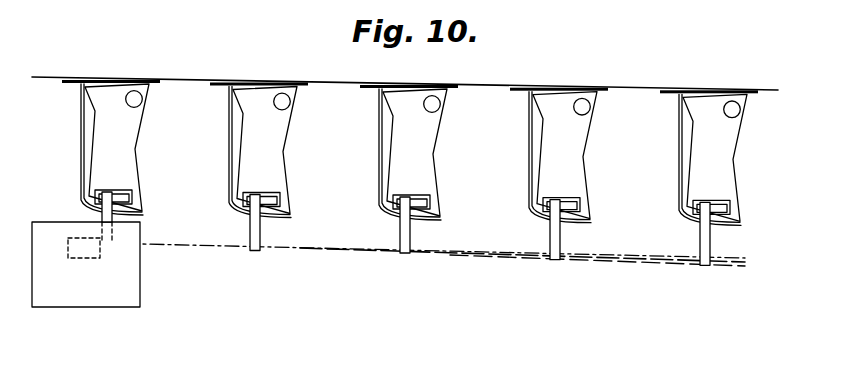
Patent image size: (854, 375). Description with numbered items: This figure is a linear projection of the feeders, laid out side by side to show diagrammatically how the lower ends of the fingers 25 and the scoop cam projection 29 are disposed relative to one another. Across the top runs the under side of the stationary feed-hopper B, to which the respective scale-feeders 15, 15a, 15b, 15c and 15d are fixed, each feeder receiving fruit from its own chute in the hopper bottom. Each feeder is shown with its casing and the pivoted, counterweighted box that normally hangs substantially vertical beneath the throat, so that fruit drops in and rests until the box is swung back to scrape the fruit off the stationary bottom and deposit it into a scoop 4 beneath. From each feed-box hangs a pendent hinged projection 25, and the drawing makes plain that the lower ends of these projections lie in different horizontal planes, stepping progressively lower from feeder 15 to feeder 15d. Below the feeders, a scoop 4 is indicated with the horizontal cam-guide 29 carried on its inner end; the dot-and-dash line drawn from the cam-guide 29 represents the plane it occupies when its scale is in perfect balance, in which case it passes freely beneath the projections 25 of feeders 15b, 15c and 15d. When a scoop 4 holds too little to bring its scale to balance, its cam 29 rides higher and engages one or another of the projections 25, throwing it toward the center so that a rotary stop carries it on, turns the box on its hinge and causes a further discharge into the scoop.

The scale-feeder 15 is at (81, 160).
The scale-feeder 15a is at (230, 183).
The scale-feeder 15b is at (380, 185).
The scale-feeder 15c is at (530, 185).
The scale-feeder 15d is at (680, 187).
The pendent hinged projection 25 is at (102, 212).
The cam-guide 29 is at (69, 241).
The scoop 4 is at (86, 264).
The feed-hopper B is at (184, 80).